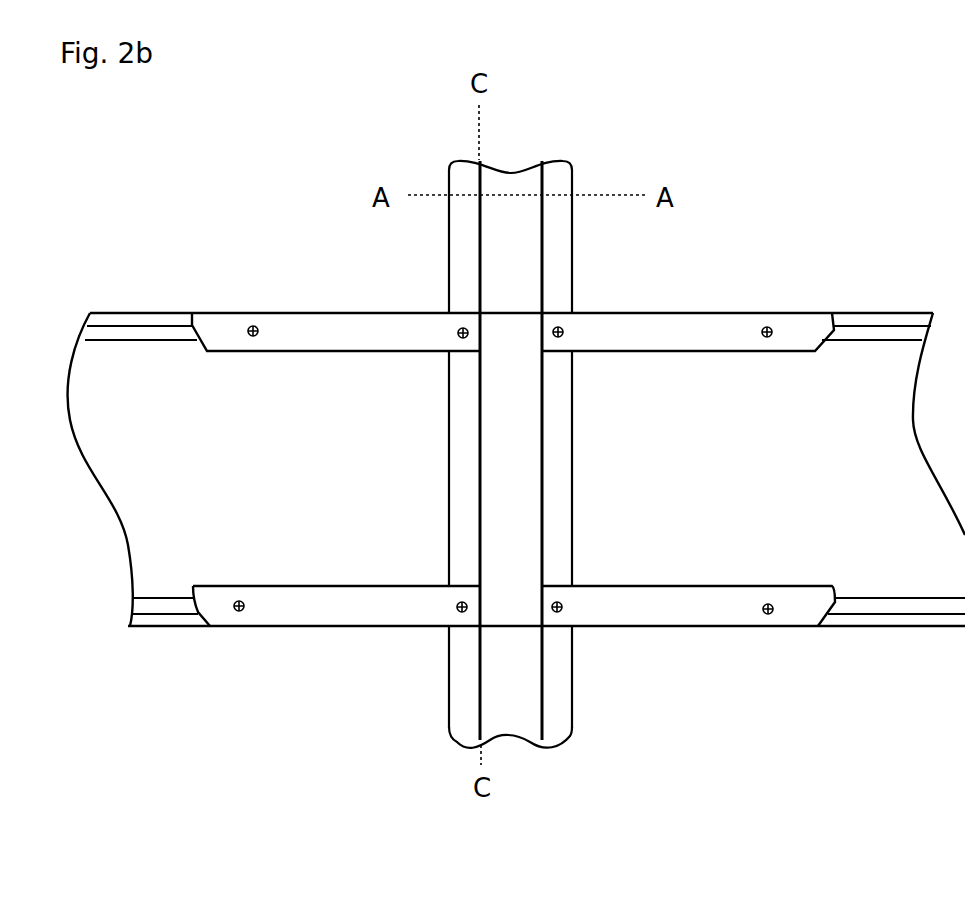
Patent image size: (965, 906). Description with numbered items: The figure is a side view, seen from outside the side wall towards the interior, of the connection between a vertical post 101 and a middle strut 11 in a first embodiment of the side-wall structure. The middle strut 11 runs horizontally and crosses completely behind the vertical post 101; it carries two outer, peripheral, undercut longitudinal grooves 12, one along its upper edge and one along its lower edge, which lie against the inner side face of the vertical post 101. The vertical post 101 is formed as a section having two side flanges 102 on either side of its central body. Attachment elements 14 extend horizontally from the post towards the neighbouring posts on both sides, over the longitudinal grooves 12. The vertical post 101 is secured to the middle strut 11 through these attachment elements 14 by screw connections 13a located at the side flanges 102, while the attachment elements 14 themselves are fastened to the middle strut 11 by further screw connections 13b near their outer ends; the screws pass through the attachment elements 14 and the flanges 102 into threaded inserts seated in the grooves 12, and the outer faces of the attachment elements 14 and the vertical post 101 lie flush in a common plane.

The middle strut 11 is at (83, 410).
The longitudinal groove 12 is at (140, 335).
The screw connection 13a is at (458, 331).
The screw connection 13b is at (249, 327).
The attachment element 14 is at (325, 333).
The vertical post 101 is at (517, 718).
The side flange 102 is at (463, 717).